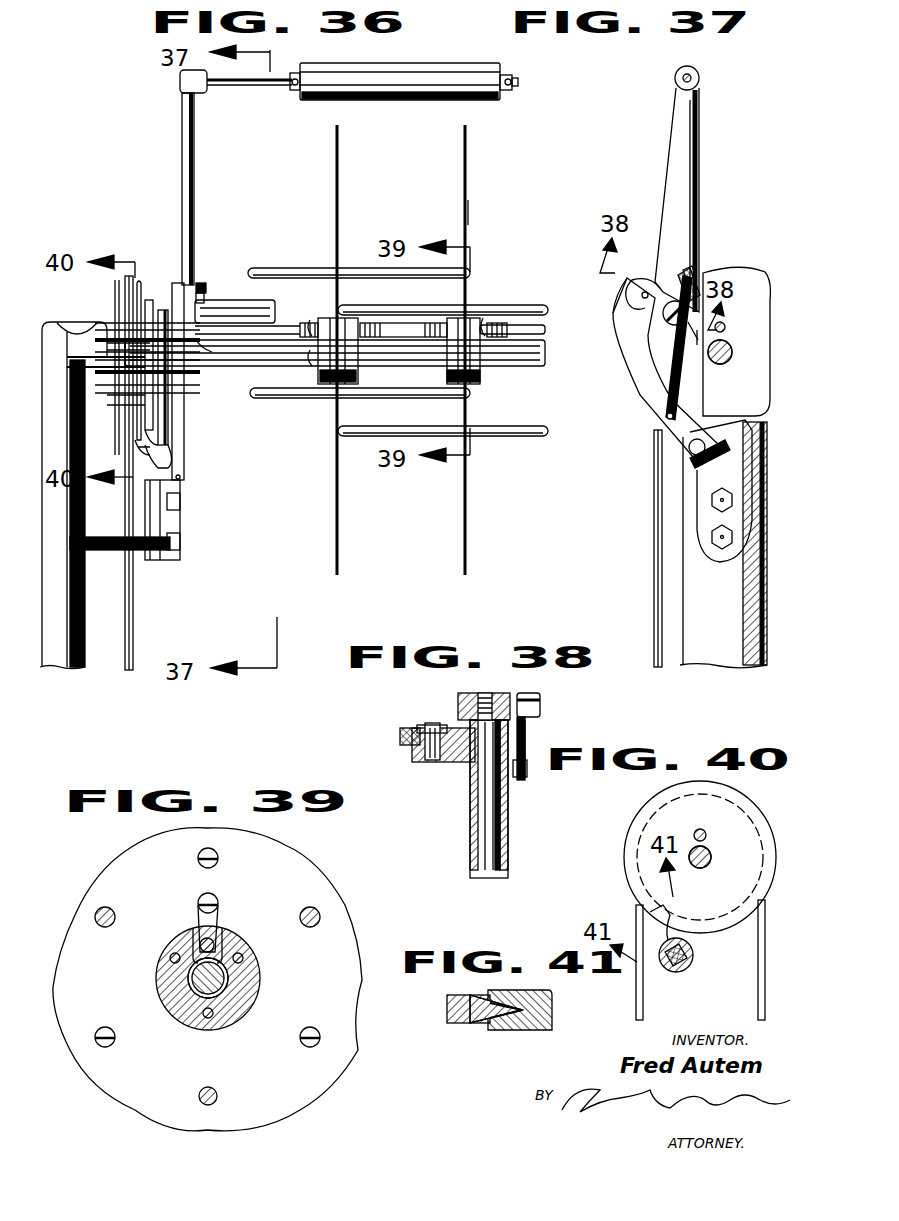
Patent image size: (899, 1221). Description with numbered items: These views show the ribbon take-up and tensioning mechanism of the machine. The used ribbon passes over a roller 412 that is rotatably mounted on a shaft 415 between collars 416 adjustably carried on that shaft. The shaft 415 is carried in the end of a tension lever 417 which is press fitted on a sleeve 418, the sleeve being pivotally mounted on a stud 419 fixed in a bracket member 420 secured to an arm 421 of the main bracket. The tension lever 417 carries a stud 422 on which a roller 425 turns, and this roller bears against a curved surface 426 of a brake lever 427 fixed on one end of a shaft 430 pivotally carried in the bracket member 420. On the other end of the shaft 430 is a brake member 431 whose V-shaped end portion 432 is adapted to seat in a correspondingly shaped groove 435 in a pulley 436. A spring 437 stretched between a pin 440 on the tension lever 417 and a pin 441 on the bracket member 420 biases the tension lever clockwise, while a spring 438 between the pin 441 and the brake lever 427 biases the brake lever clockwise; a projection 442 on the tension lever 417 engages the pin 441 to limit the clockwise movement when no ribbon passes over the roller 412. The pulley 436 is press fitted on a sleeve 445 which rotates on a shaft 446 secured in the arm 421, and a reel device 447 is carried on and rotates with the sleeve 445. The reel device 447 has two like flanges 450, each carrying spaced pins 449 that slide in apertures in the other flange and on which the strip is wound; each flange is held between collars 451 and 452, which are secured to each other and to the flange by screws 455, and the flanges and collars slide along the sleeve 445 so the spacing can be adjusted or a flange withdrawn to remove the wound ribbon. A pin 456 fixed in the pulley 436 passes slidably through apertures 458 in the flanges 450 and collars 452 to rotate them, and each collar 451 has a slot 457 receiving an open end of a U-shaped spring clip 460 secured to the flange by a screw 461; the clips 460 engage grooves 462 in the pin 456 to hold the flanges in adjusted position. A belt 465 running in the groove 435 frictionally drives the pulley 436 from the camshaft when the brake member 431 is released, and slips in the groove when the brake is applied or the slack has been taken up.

In FIG. 36, the roller 412 is at (295, 103).
In FIG. 36, the shaft 415 is at (270, 92).
In FIG. 37, the shaft 415 is at (700, 78).
In FIG. 36, the collars 416 is at (506, 72).
In FIG. 36, the tension lever 417 is at (195, 184).
In FIG. 37, the tension lever 417 is at (700, 156).
In FIG. 38, the tension lever 417 is at (530, 722).
In FIG. 36, the sleeve 418 is at (258, 290).
In FIG. 38, the sleeve 418 is at (470, 805).
In FIG. 37, the stud 419 is at (668, 318).
In FIG. 38, the stud 419 is at (480, 842).
In FIG. 36, the bracket member 420 is at (160, 522).
In FIG. 37, the bracket member 420 is at (700, 496).
In FIG. 38, the bracket member 420 is at (540, 697).
In FIG. 36, the arm 421 is at (63, 667).
In FIG. 37, the arm 421 is at (688, 602).
In FIG. 37, the stud 422 is at (642, 295).
In FIG. 38, the stud 422 is at (430, 723).
In FIG. 37, the roller 425 is at (645, 280).
In FIG. 38, the roller 425 is at (418, 726).
In FIG. 37, the curved surface 426 is at (625, 310).
In FIG. 36, the brake lever 427 is at (185, 440).
In FIG. 37, the brake lever 427 is at (637, 380).
In FIG. 38, the brake lever 427 is at (400, 740).
In FIG. 37, the shaft 430 is at (690, 455).
In FIG. 40, the shaft 430 is at (680, 965).
In FIG. 36, the brake member 431 is at (140, 447).
In FIG. 40, the brake member 431 is at (700, 950).
In FIG. 41, the brake member 431 is at (447, 1010).
In FIG. 41, the V-shaped end portion 432 is at (485, 1025).
In FIG. 41, the groove 435 is at (510, 1030).
In FIG. 36, the pulley 436 is at (140, 283).
In FIG. 37, the pulley 436 is at (770, 285).
In FIG. 40, the pulley 436 is at (625, 855).
In FIG. 41, the pulley 436 is at (552, 1010).
In FIG. 36, the spring 437 is at (200, 295).
In FIG. 37, the spring 437 is at (700, 284).
In FIG. 36, the spring 438 is at (190, 410).
In FIG. 37, the spring 438 is at (682, 397).
In FIG. 36, the pin 440 is at (198, 285).
In FIG. 37, the pin 440 is at (697, 272).
In FIG. 36, the pin 441 is at (222, 352).
In FIG. 37, the pin 441 is at (688, 332).
In FIG. 38, the pin 441 is at (522, 778).
In FIG. 37, the projection 442 is at (697, 340).
In FIG. 38, the projection 442 is at (527, 747).
In FIG. 36, the sleeve 445 is at (238, 368).
In FIG. 37, the sleeve 445 is at (735, 348).
In FIG. 39, the sleeve 445 is at (205, 990).
In FIG. 40, the sleeve 445 is at (703, 868).
In FIG. 37, the shaft 446 is at (733, 355).
In FIG. 39, the shaft 446 is at (198, 982).
In FIG. 40, the shaft 446 is at (712, 855).
In FIG. 36, the reel device 447 is at (468, 216).
In FIG. 36, the pins 449 is at (528, 440).
In FIG. 39, the pins 449 is at (218, 1090).
In FIG. 36, the flanges 450 is at (463, 207).
In FIG. 39, the flanges 450 is at (310, 870).
In FIG. 36, the collar 451 is at (478, 384).
In FIG. 39, the collar 451 is at (262, 990).
In FIG. 36, the collar 452 is at (455, 384).
In FIG. 36, the nut 455 is at (480, 378).
In FIG. 39, the nut 455 is at (245, 957).
In FIG. 36, the pin 456 is at (530, 330).
In FIG. 37, the pin 456 is at (727, 327).
In FIG. 39, the pin 456 is at (215, 945).
In FIG. 40, the pin 456 is at (712, 822).
In FIG. 39, the slot 457 is at (195, 945).
In FIG. 39, the apertures 458 is at (187, 960).
In FIG. 39, the spring clip 460 is at (218, 920).
In FIG. 39, the screw 461 is at (202, 895).
In FIG. 36, the grooves 462 is at (437, 322).
In FIG. 36, the belt 465 is at (134, 616).
In FIG. 37, the belt 465 is at (654, 552).
In FIG. 40, the belt 465 is at (640, 910).